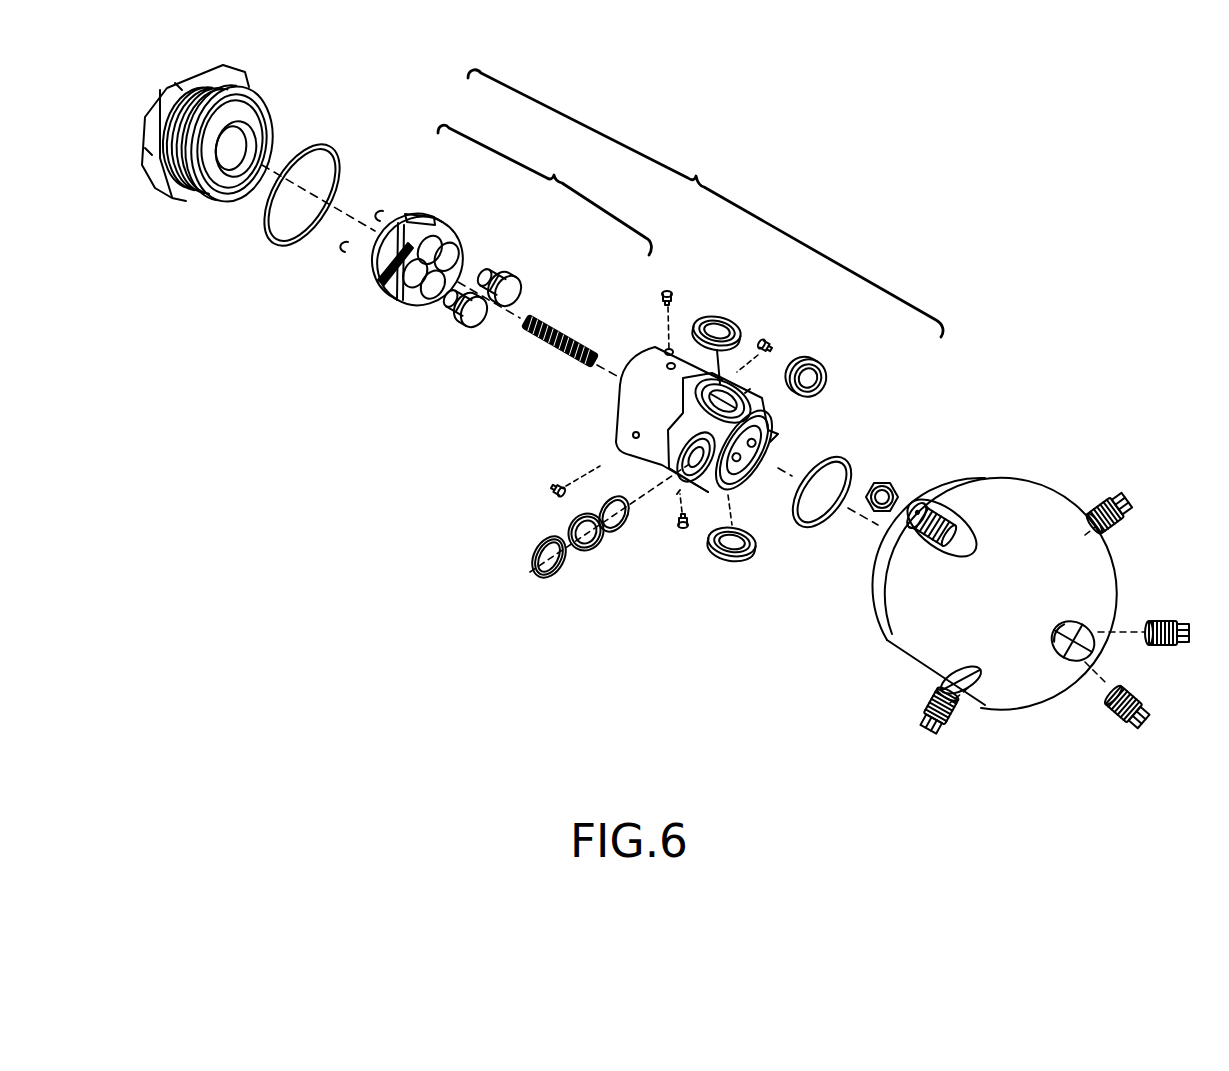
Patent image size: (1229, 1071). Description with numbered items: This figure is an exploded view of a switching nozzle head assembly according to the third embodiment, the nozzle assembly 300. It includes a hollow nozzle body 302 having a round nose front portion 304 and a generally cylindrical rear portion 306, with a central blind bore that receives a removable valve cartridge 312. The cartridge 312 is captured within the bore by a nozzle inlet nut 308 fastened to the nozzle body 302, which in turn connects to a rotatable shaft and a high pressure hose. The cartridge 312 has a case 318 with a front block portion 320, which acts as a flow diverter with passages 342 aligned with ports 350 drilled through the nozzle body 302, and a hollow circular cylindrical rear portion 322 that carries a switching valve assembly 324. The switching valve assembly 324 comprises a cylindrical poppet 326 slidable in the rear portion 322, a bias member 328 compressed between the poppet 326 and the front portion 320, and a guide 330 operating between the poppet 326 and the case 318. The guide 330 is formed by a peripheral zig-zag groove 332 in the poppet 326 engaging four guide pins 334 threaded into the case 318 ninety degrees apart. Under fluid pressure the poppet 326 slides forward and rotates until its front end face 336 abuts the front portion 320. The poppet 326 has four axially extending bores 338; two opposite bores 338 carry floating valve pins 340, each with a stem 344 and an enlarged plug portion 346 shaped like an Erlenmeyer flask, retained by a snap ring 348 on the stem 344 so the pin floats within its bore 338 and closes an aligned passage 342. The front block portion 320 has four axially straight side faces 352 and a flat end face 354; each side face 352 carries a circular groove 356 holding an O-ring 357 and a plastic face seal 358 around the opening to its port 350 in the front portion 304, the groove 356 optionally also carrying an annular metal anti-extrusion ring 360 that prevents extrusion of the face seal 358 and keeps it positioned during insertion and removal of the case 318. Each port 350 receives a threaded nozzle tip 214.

The threaded nozzle tip 214 is at (905, 484).
The nozzle assembly 300 is at (856, 171).
The nozzle body 302 is at (1033, 499).
The round nose front portion 304 is at (1028, 706).
The cylindrical rear portion 306 is at (1008, 492).
The nozzle inlet nut 308 is at (268, 104).
The removable valve cartridge 312 is at (705, 203).
The case 318 is at (613, 404).
The front block portion 320 is at (709, 492).
The cylindrical rear portion 322 is at (640, 450).
The switching valve assembly 324 is at (544, 190).
The poppet 326 is at (434, 213).
The bias member 328 is at (575, 345).
The guide 330 is at (414, 215).
The groove 332 is at (380, 272).
The guide pins 334 is at (673, 297).
The front end face 336 is at (413, 302).
The axially extending bores 338 is at (447, 238).
The floating valve pins 340 is at (526, 300).
The passages 342 is at (748, 392).
The stem 344 is at (512, 275).
The enlarged plug portion 346 is at (528, 290).
The snap ring 348 is at (378, 212).
The ports 350 is at (960, 532).
The side faces 352 is at (694, 398).
The flat end face 354 is at (740, 494).
The circular groove 356 is at (745, 388).
The O-ring 357 is at (596, 503).
The plastic face seal 358 is at (587, 553).
The anti-extrusion ring 360 is at (549, 580).